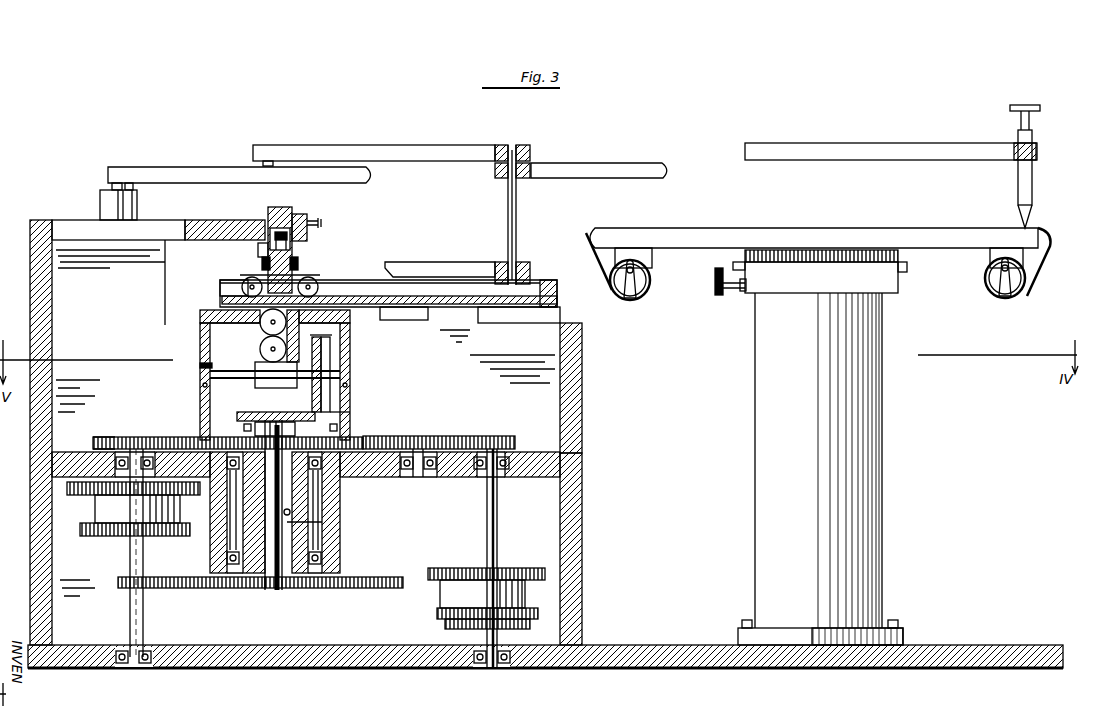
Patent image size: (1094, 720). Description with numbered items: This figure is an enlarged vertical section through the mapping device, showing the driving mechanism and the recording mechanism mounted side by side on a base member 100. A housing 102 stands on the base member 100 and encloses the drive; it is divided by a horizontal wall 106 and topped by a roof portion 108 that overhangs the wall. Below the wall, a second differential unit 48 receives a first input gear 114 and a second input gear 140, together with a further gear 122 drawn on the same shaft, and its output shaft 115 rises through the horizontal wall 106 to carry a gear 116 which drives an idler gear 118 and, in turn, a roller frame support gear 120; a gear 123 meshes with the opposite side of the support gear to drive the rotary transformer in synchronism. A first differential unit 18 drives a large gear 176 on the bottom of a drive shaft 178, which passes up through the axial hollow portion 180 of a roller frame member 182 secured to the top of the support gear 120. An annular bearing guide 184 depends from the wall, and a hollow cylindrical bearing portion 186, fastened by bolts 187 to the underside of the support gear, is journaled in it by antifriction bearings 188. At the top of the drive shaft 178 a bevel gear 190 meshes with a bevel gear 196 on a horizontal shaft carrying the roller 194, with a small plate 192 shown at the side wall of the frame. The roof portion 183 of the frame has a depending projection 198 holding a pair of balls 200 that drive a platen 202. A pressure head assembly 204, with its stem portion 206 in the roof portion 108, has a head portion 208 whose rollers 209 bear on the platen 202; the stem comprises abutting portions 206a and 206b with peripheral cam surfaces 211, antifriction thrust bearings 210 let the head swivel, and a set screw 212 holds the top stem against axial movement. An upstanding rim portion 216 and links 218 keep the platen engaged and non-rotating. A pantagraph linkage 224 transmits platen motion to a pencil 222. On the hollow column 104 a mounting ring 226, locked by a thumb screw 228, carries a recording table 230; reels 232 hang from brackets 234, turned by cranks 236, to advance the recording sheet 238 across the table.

The first differential unit 18 is at (94, 511).
The second differential unit 48 is at (527, 597).
The base member 100 is at (637, 672).
The housing 102 is at (582, 476).
The upstanding column 104 is at (882, 466).
The horizontal wall 106 is at (582, 432).
The horizontal roof portion 108 is at (210, 220).
The first input gear 114 is at (440, 613).
The output shaft 115 is at (498, 522).
The gear 116 is at (550, 455).
The idler gear 118 is at (446, 437).
The roller frame support gear 120 is at (400, 439).
The gear 122 is at (446, 622).
The gear 123 is at (88, 440).
The second input gear 140 is at (518, 568).
The large gear 176 is at (328, 576).
The drive shaft 178 is at (271, 576).
The axial hollow portion 180 is at (323, 523).
The roller frame member 182 is at (359, 430).
The roof portion 183 is at (213, 314).
The annular bearing guide 184 is at (354, 506).
The hollow cylindrical bearing portion 186 is at (239, 573).
The bolts 187 is at (213, 441).
The antifriction bearings 188 is at (227, 561).
The bevel gear 190 is at (242, 430).
The plate 192 is at (201, 368).
The roller 194 is at (254, 389).
The bevel gear 196 is at (342, 338).
The central annular depending projection 198 is at (200, 336).
The balls 200 is at (262, 346).
The platen 202 is at (388, 268).
The pressure head assembly 204 is at (308, 247).
The stem portion 206 is at (266, 241).
The stem portion 206a is at (264, 278).
The top stem portion 206b is at (272, 207).
The head portion 208 is at (294, 258).
The rollers 209 is at (306, 292).
The antifriction thrust bearings 210 is at (316, 227).
The peripheral cam surfaces 211 is at (268, 221).
The set screw 212 is at (314, 214).
The upstanding rim portion 216 is at (557, 298).
The links 218 is at (222, 284).
The pencil 222 is at (1035, 186).
The pantagraph linkage 224 is at (437, 150).
The mounting ring 226 is at (897, 292).
The thumb screw 228 is at (720, 296).
The recording table 230 is at (951, 243).
The reels 232 is at (652, 294).
The brackets 234 is at (652, 257).
The cranks 236 is at (628, 304).
The sheet 238 is at (588, 265).